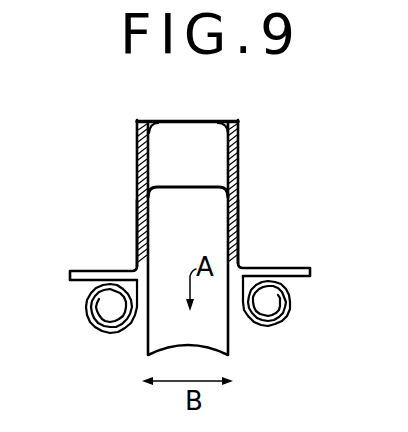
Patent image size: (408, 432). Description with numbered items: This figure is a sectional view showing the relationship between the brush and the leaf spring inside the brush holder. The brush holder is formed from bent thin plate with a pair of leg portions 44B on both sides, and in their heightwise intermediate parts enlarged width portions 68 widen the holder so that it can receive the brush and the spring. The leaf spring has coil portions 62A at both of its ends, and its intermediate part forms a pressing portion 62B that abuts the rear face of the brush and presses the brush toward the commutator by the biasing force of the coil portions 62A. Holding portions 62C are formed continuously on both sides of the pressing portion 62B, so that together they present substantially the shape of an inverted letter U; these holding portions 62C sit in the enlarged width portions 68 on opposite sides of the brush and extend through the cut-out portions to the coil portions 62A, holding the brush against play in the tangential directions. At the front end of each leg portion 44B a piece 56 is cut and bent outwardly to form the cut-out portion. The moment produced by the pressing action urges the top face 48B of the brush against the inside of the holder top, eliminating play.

The enlarged width portion 68 is at (222, 118).
The pressing portion 62B is at (184, 183).
The leg portion 44B is at (240, 147).
The top face 48B is at (214, 211).
The holding portion 62C is at (240, 218).
The piece 56 is at (312, 270).
The coil portion 62A is at (290, 315).